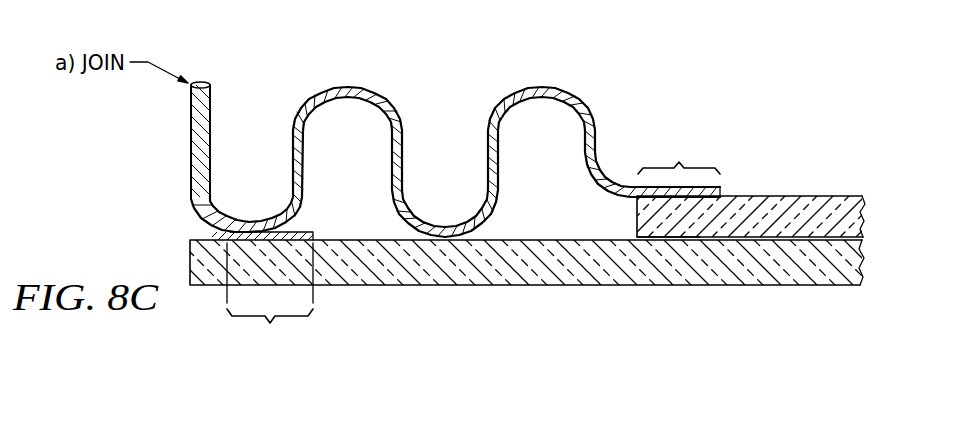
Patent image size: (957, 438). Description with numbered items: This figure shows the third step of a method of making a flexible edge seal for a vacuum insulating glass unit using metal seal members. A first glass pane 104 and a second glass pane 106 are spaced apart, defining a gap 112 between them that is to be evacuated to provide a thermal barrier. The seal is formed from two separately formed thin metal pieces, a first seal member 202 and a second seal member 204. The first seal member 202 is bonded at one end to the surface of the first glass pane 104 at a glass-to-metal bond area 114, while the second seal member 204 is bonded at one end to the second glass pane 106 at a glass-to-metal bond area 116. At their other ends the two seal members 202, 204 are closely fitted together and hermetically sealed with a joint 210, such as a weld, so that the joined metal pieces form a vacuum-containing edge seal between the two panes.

The first glass pane 104 is at (791, 207).
The second glass pane 106 is at (800, 277).
The gap 112 is at (636, 238).
The glass-to-metal bond area 114 is at (679, 153).
The glass-to-metal bond area 116 is at (270, 299).
The first seal member 202 is at (404, 142).
The second seal member 204 is at (194, 213).
The joint 210 is at (202, 84).